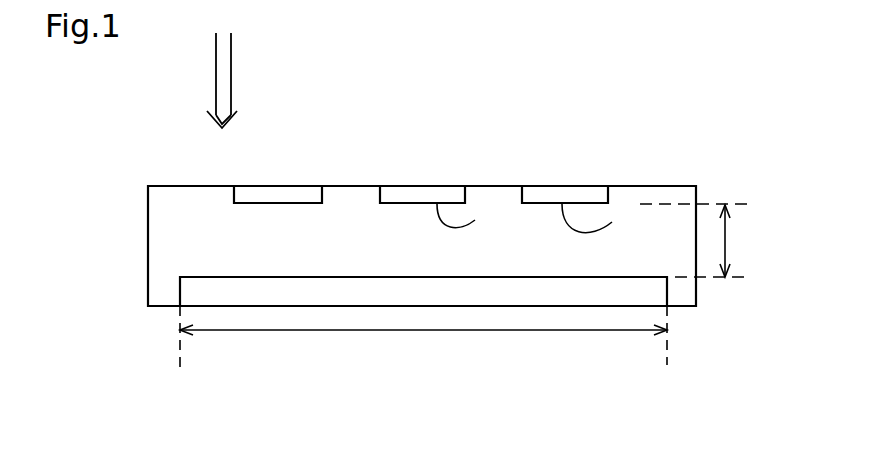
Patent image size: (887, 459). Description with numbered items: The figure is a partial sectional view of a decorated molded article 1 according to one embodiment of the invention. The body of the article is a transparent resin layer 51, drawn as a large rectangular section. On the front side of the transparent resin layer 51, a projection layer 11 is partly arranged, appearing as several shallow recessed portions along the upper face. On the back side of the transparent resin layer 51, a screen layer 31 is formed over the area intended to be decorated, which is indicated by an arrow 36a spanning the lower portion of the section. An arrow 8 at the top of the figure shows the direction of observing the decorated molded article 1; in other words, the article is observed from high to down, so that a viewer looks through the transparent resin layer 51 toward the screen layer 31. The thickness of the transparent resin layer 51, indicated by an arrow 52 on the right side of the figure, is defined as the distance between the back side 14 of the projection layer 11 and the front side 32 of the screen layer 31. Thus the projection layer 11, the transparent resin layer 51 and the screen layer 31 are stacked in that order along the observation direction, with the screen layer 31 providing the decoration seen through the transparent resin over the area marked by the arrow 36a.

The decorated molded article 1 is at (563, 130).
The arrow showing direction of observation 8 is at (203, 80).
The projection layer 11 is at (270, 197).
The back side of the projection layer 14 is at (475, 220).
The screen layer 31 is at (186, 289).
The front side of the screen layer 32 is at (345, 277).
The area intended to be decorated 36a is at (622, 333).
The transparent resin layer 51 is at (167, 243).
The thickness of the transparent resin layer 52 is at (727, 240).